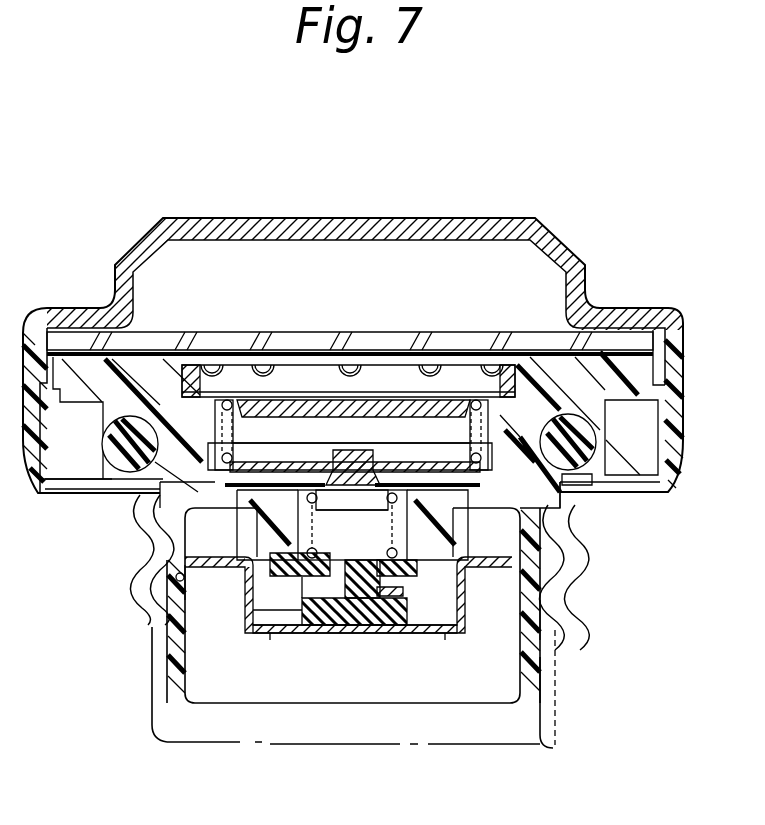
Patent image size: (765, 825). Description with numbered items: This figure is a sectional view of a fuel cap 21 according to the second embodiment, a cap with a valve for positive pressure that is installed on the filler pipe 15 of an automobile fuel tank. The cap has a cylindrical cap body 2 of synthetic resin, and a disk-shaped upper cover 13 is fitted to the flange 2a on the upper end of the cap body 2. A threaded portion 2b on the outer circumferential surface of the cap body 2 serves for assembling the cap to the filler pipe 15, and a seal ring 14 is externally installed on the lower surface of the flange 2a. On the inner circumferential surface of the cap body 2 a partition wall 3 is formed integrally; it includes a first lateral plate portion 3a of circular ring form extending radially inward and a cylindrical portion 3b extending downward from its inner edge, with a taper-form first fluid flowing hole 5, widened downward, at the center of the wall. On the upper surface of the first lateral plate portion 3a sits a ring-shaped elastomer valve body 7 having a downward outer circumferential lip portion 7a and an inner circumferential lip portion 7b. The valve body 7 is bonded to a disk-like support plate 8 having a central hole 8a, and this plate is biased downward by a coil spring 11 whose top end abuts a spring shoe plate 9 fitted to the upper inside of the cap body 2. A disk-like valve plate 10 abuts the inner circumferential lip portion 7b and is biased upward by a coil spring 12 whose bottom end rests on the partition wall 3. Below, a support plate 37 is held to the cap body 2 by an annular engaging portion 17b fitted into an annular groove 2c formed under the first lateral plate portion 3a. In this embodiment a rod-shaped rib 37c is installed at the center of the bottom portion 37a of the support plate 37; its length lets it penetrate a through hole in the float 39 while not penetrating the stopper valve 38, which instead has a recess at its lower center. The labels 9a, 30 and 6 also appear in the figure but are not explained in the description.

The fuel cap 21 is at (463, 176).
The upper cover 13 is at (262, 230).
The coil spring 11 is at (218, 375).
The spring shoe plate 9 is at (262, 392).
The spring seat 9a is at (362, 372).
The inner circumferential lip portion 7b is at (320, 408).
The hole 8a is at (345, 440).
The support plate 8 is at (420, 465).
The valve body 7 is at (215, 482).
The outer circumferential lip portion 7a is at (560, 492).
The seal ring 14 is at (112, 442).
The partition wall 3 is at (478, 518).
The first lateral plate portion 3a is at (212, 492).
The cylindrical portion 3b is at (540, 565).
The cap body 2 is at (532, 665).
The flange 2a is at (610, 395).
The threaded portion 2b is at (548, 620).
The annular groove 2c is at (185, 598).
The filler pipe 15 is at (566, 556).
The engaging portion 17b is at (180, 577).
The coil spring 12 is at (405, 558).
The valve plate 10 is at (336, 500).
The first fluid flowing hole 5 is at (370, 578).
The valve body 30 is at (443, 565).
The stopper valve 38 is at (328, 583).
The float 39 is at (300, 608).
The support plate 37 is at (470, 628).
The bottom portion 37a is at (392, 628).
The rod-shaped rib 37c is at (352, 628).
The base plate 6 is at (270, 633).